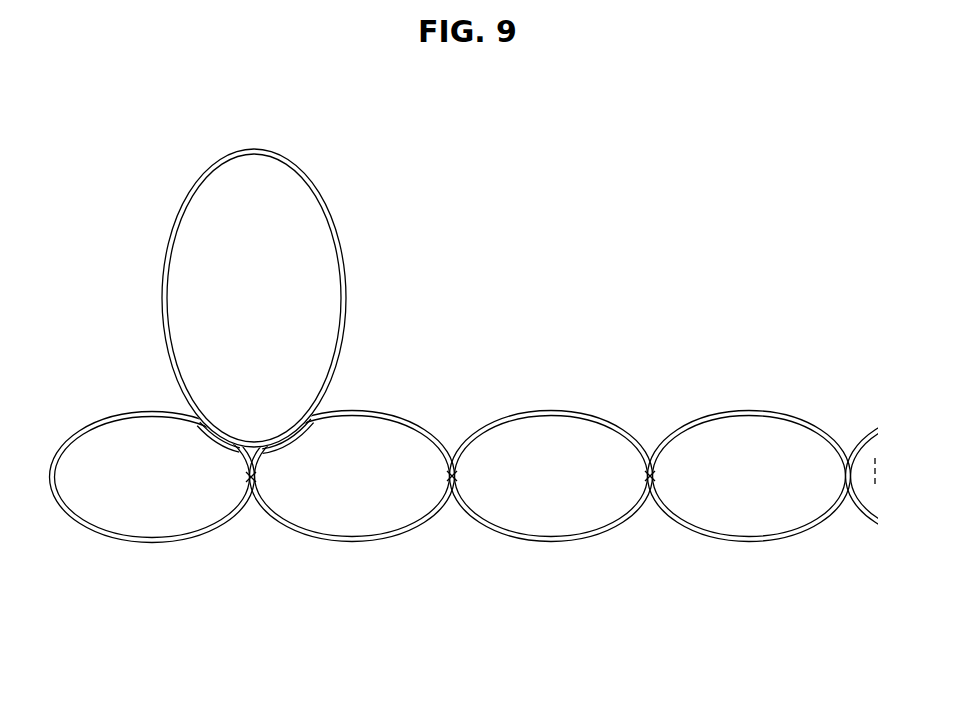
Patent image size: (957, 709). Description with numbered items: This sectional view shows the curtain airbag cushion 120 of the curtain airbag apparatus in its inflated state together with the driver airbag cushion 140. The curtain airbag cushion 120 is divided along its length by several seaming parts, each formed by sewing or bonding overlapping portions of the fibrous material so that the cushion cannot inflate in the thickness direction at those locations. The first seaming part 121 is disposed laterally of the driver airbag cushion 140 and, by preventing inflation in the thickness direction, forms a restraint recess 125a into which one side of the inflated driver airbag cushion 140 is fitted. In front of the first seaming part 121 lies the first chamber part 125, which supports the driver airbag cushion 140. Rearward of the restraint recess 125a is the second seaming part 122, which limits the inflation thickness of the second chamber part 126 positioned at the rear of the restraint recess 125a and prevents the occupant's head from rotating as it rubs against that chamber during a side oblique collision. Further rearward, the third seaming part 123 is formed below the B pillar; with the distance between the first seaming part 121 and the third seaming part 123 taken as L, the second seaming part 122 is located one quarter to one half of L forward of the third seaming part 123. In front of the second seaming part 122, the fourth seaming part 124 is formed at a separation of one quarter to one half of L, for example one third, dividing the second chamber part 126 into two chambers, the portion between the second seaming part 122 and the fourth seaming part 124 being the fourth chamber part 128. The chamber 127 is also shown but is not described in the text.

The curtain airbag cushion 120 is at (501, 465).
The first seaming part 121 is at (251, 482).
The second seaming part 122 is at (650, 482).
The third seaming part 123 is at (835, 507).
The fourth seaming part 124 is at (452, 482).
The first chamber part 125 is at (150, 420).
The restraint recess 125a is at (218, 437).
The second chamber part 126 is at (378, 540).
The fourth chamber 127 is at (775, 538).
The fourth chamber part 128 is at (540, 540).
The driver airbag cushion 140 is at (322, 192).